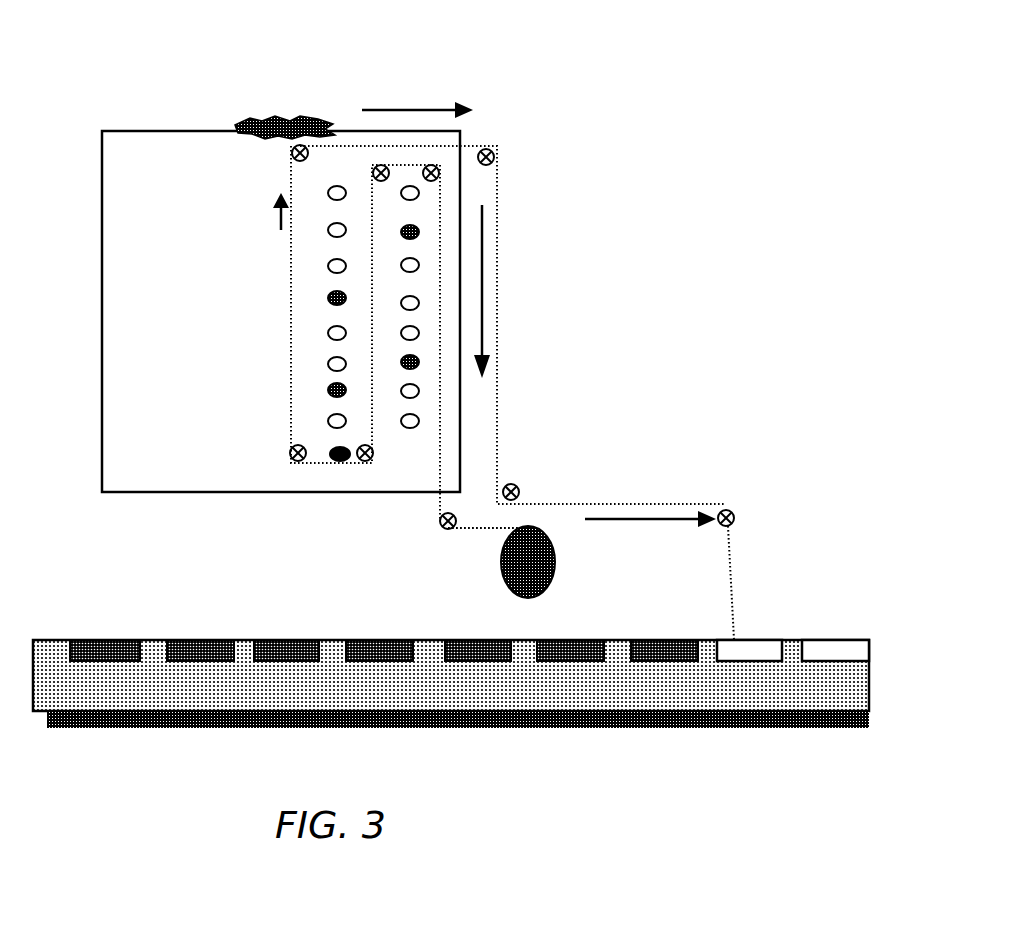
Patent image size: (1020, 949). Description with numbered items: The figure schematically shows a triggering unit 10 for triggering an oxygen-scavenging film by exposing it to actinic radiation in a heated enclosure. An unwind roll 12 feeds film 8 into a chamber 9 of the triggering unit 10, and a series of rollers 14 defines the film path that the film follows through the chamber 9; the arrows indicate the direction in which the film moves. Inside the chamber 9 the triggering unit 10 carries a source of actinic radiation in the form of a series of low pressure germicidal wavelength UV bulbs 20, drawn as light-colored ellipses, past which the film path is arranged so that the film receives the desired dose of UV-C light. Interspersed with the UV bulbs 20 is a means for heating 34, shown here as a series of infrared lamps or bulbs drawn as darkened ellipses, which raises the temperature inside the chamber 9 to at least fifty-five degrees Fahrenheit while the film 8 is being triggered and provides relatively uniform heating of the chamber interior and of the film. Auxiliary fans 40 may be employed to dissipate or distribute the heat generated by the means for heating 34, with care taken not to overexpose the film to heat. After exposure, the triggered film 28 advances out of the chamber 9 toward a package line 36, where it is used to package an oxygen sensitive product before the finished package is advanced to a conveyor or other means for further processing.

The triggering unit 10 is at (556, 56).
The chamber 9 is at (180, 509).
The auxiliary fans 40 is at (277, 107).
The triggered film 28 is at (498, 432).
The rollers 14 is at (500, 156).
The UV bulbs 20 is at (327, 231).
The means for heating 34 is at (327, 390).
The film 8 is at (445, 530).
The unwind roll 12 is at (501, 576).
The package line 36 is at (729, 728).